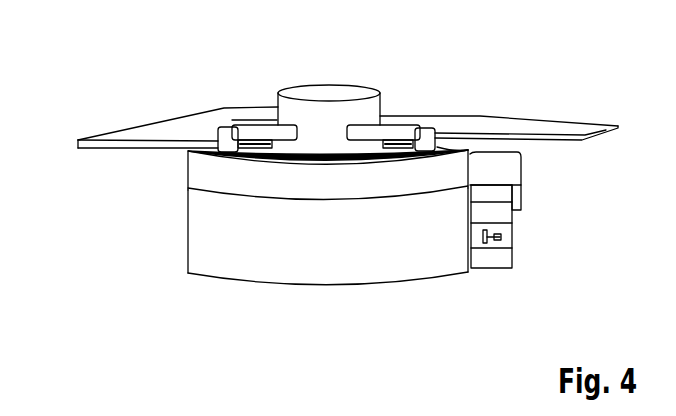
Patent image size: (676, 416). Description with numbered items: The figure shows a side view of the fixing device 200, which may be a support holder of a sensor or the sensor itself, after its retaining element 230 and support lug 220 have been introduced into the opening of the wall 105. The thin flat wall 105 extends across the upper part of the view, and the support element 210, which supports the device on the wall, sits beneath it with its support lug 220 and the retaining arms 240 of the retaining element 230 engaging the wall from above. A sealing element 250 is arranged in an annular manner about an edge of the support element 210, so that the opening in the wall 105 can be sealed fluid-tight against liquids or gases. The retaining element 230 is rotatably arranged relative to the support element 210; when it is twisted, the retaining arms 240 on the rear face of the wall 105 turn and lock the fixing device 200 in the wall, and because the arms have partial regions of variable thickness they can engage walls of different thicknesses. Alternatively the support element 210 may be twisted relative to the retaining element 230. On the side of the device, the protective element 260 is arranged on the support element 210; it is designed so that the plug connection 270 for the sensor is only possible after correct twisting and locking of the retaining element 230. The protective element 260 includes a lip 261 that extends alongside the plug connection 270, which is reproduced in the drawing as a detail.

The wall 105 is at (177, 130).
The fixing device 200 is at (97, 230).
The support element 210 is at (203, 183).
The support lug 220 is at (226, 127).
The retaining element 230 is at (193, 243).
The retaining arms 240 is at (260, 125).
The sealing element 250 is at (203, 158).
The protective element 260 is at (510, 170).
The lip 261 is at (522, 198).
The plug connection 270 is at (502, 238).